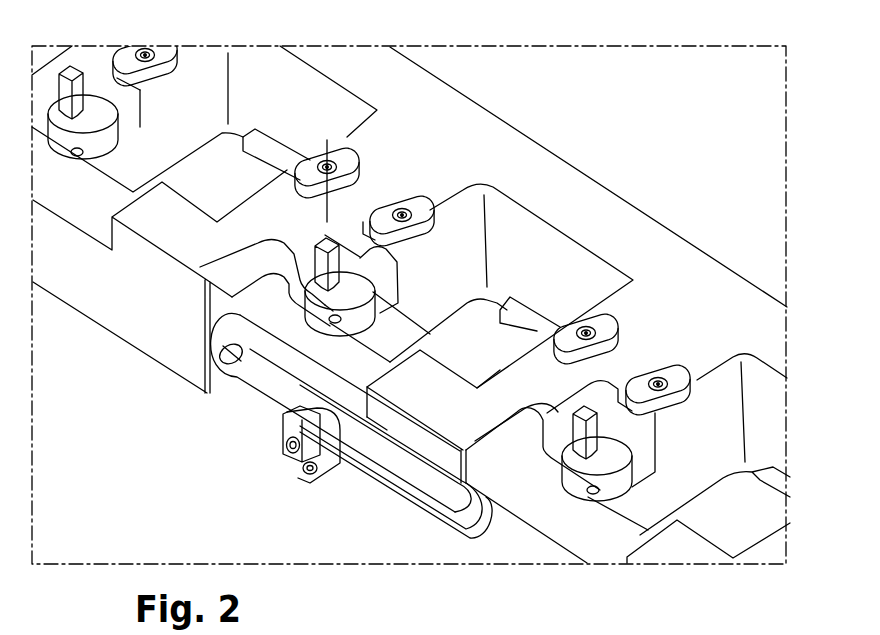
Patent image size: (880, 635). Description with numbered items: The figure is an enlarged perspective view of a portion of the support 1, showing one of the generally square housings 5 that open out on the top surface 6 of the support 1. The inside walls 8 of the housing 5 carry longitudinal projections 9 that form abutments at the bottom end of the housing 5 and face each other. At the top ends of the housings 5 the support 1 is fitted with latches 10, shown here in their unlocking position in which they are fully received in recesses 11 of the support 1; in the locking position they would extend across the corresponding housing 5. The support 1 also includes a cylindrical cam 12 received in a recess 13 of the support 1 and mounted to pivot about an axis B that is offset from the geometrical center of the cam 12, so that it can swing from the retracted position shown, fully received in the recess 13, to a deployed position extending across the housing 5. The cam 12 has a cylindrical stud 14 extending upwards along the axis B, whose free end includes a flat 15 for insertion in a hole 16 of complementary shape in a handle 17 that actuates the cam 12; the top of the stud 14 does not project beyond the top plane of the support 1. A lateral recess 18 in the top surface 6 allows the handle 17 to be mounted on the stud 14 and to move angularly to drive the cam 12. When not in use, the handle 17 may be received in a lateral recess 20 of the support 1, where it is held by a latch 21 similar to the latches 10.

The support 1 is at (600, 160).
The housing 5 is at (519, 244).
The top surface 6 is at (481, 137).
The inside wall 8 is at (318, 108).
The longitudinal projection 9 is at (535, 322).
The latch 10 is at (419, 225).
The recess 11 is at (364, 203).
The cam 12 is at (410, 321).
The recess 13 is at (400, 286).
The cylindrical stud 14 is at (323, 288).
The flat 15 is at (386, 250).
The hole 16 is at (230, 355).
The handle 17 is at (383, 472).
The lateral recess 18 is at (258, 293).
The lateral recess 20 is at (428, 508).
The latch 21 is at (336, 464).
The axis B is at (328, 247).